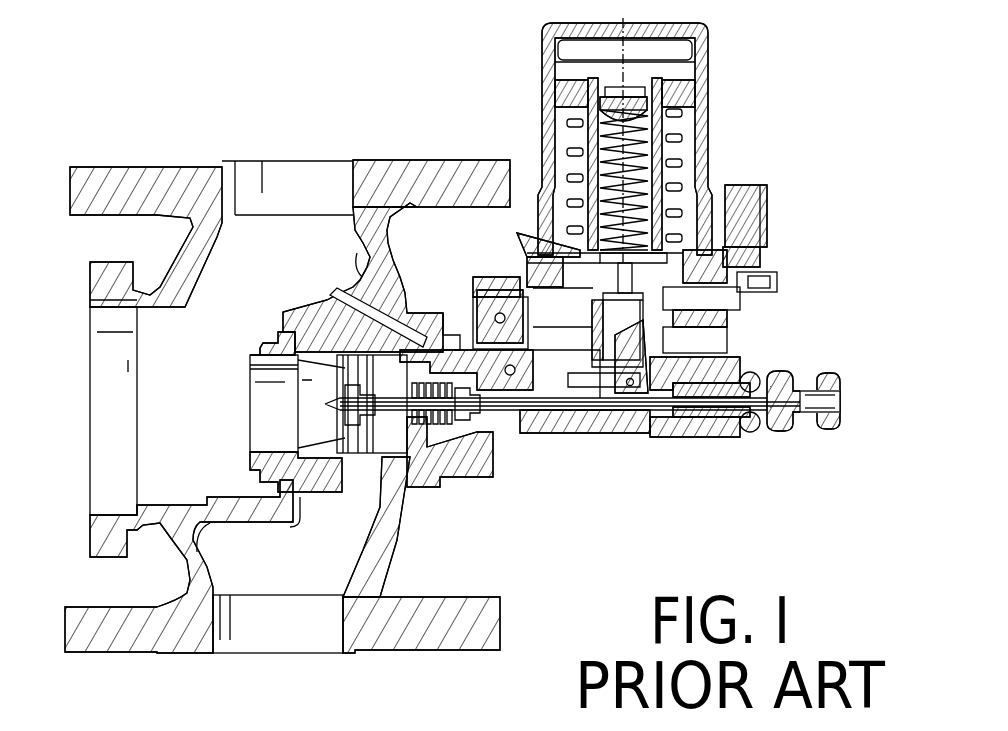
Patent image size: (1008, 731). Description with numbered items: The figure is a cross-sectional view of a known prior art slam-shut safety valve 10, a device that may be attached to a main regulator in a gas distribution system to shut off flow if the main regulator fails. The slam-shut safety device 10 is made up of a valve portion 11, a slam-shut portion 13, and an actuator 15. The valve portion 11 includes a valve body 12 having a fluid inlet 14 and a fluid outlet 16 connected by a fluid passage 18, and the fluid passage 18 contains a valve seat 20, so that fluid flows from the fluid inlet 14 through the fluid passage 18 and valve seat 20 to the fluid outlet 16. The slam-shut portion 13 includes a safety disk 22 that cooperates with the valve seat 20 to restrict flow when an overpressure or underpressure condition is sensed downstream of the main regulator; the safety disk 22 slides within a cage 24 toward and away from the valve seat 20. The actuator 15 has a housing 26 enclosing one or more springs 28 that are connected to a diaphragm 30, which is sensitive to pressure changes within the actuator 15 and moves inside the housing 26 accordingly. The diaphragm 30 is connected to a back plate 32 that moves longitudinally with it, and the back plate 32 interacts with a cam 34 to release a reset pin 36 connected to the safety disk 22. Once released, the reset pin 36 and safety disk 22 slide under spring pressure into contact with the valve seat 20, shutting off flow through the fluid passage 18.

The slam-shut safety valve 10 is at (166, 120).
The valve portion 11 is at (495, 548).
The valve body 12 is at (387, 537).
The slam-shut portion 13 is at (655, 490).
The fluid inlet 14 is at (262, 637).
The actuator 15 is at (520, 43).
The fluid outlet 16 is at (250, 163).
The fluid passage 18 is at (213, 313).
The valve seat 20 is at (317, 352).
The safety disk 22 is at (463, 483).
The cage 24 is at (397, 357).
The housing 26 is at (705, 93).
The springs 28 is at (570, 155).
The diaphragm 30 is at (530, 280).
The back plate 32 is at (778, 297).
The cam 34 is at (663, 343).
The reset pin 36 is at (657, 397).